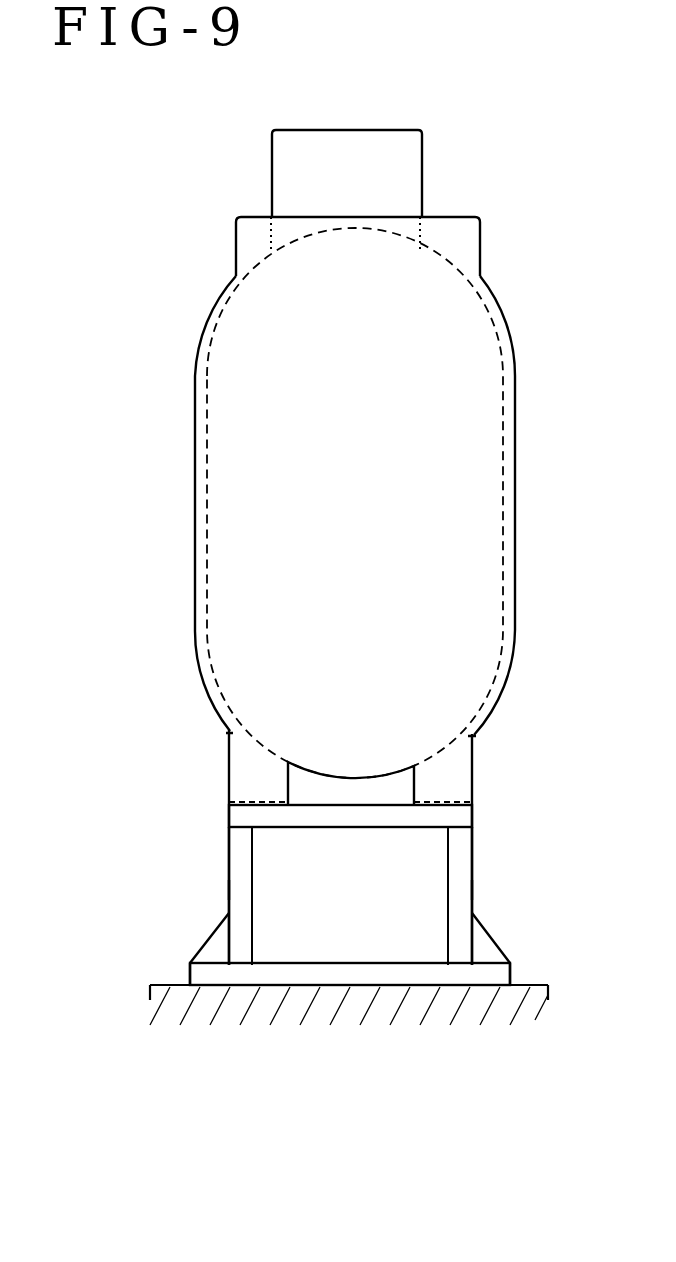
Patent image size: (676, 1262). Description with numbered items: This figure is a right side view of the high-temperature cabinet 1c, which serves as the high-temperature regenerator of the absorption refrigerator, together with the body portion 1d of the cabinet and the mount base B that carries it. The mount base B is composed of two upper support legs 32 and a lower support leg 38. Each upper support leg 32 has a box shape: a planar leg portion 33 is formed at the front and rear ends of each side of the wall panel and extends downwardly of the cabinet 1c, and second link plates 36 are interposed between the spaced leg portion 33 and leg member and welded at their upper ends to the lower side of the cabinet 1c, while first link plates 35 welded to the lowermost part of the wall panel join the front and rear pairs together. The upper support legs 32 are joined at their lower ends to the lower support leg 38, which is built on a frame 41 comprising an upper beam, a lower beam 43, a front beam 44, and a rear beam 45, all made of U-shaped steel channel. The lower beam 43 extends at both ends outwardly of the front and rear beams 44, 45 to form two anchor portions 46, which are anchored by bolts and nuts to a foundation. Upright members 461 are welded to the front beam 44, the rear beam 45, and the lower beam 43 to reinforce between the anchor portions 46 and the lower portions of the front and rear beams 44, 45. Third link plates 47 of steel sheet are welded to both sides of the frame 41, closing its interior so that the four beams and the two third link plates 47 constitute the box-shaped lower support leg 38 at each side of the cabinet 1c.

The high-temperature cabinet 1c is at (220, 248).
The tank body 1d is at (223, 462).
The upper support leg 32 is at (227, 757).
The second link plate 36 is at (228, 728).
The leg portion 33 is at (228, 784).
The first link plate 35 is at (377, 792).
The frame 41 is at (237, 878).
The rear beam 45 is at (227, 850).
The front beam 44 is at (473, 853).
The lower support leg 38 is at (220, 893).
The upright member 461 is at (205, 947).
The anchor portion 46 is at (193, 975).
The lower beam 43 is at (392, 975).
The third link plate 47 is at (303, 935).
The mount base B is at (197, 783).